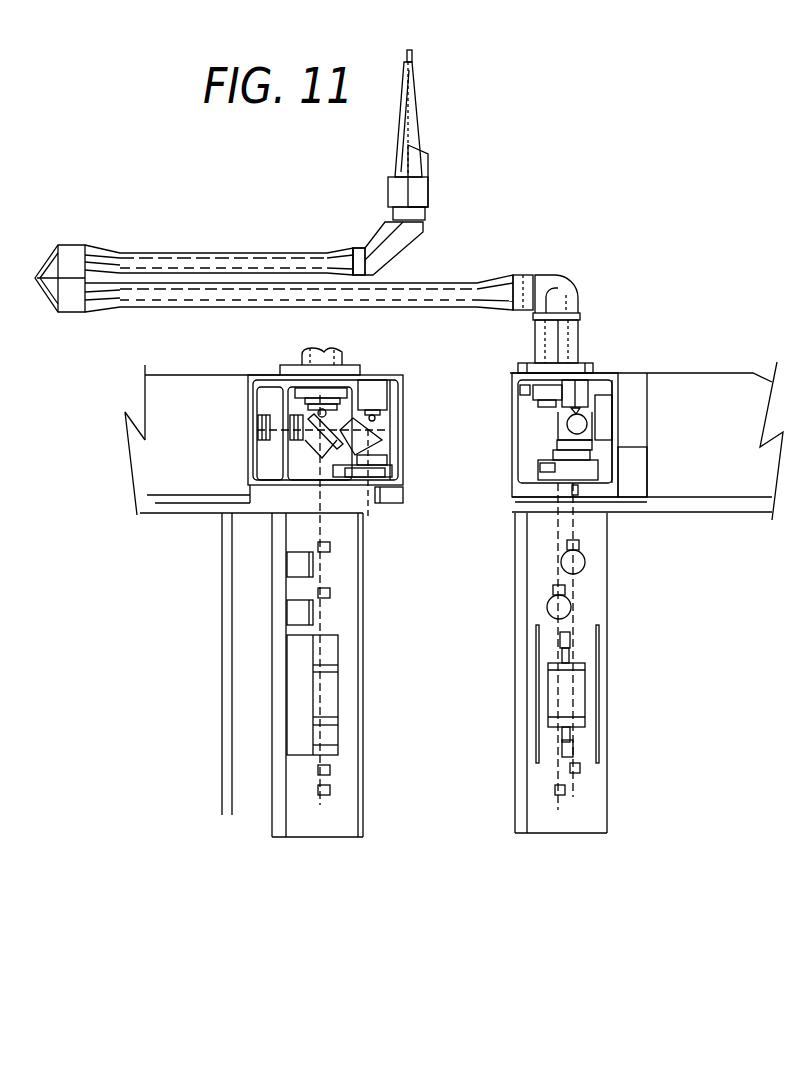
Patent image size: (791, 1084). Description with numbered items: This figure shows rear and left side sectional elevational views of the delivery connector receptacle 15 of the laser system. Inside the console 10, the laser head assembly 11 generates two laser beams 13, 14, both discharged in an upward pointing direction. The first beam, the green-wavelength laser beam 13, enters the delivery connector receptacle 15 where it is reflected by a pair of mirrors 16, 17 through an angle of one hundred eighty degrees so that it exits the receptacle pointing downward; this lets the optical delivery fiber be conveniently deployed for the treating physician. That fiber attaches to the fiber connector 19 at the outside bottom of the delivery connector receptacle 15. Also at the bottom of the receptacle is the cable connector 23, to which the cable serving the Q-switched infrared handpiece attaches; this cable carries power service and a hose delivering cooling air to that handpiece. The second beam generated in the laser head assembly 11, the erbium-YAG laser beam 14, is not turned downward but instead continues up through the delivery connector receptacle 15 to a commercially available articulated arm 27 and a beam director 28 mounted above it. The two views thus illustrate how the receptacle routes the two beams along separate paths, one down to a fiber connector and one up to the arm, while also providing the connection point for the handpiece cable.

The console 10 is at (232, 370).
The laser head assembly 11 is at (530, 685).
The 532 nm laser beam 13 is at (370, 503).
The 2940 nm laser beam 14 is at (580, 342).
The delivery connector receptacle 15 is at (498, 392).
The mirror 16 is at (400, 430).
The mirror 17 is at (340, 447).
The 532 nm connector 19 is at (366, 500).
The cable connector 23 is at (403, 497).
The articulated arm 27 is at (232, 253).
The beam director 28 is at (423, 137).